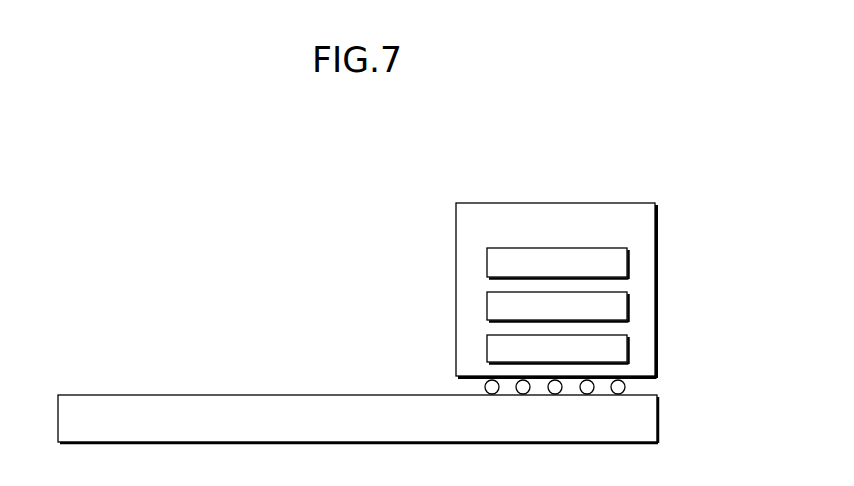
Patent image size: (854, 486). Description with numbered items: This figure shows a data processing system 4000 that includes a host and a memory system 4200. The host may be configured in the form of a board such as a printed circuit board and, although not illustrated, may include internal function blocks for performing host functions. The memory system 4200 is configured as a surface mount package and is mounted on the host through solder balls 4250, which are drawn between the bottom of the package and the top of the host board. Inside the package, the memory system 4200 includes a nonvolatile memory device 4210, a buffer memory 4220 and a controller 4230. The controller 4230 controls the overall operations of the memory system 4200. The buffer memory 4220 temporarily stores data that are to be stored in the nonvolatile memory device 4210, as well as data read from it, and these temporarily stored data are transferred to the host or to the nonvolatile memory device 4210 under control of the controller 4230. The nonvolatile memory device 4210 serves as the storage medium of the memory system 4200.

The data processing system 4000 is at (135, 177).
The memory system 4200 is at (655, 193).
The nonvolatile memory device 4210 is at (558, 263).
The buffer memory 4220 is at (558, 307).
The controller 4230 is at (558, 349).
The solder balls 4250 is at (626, 385).